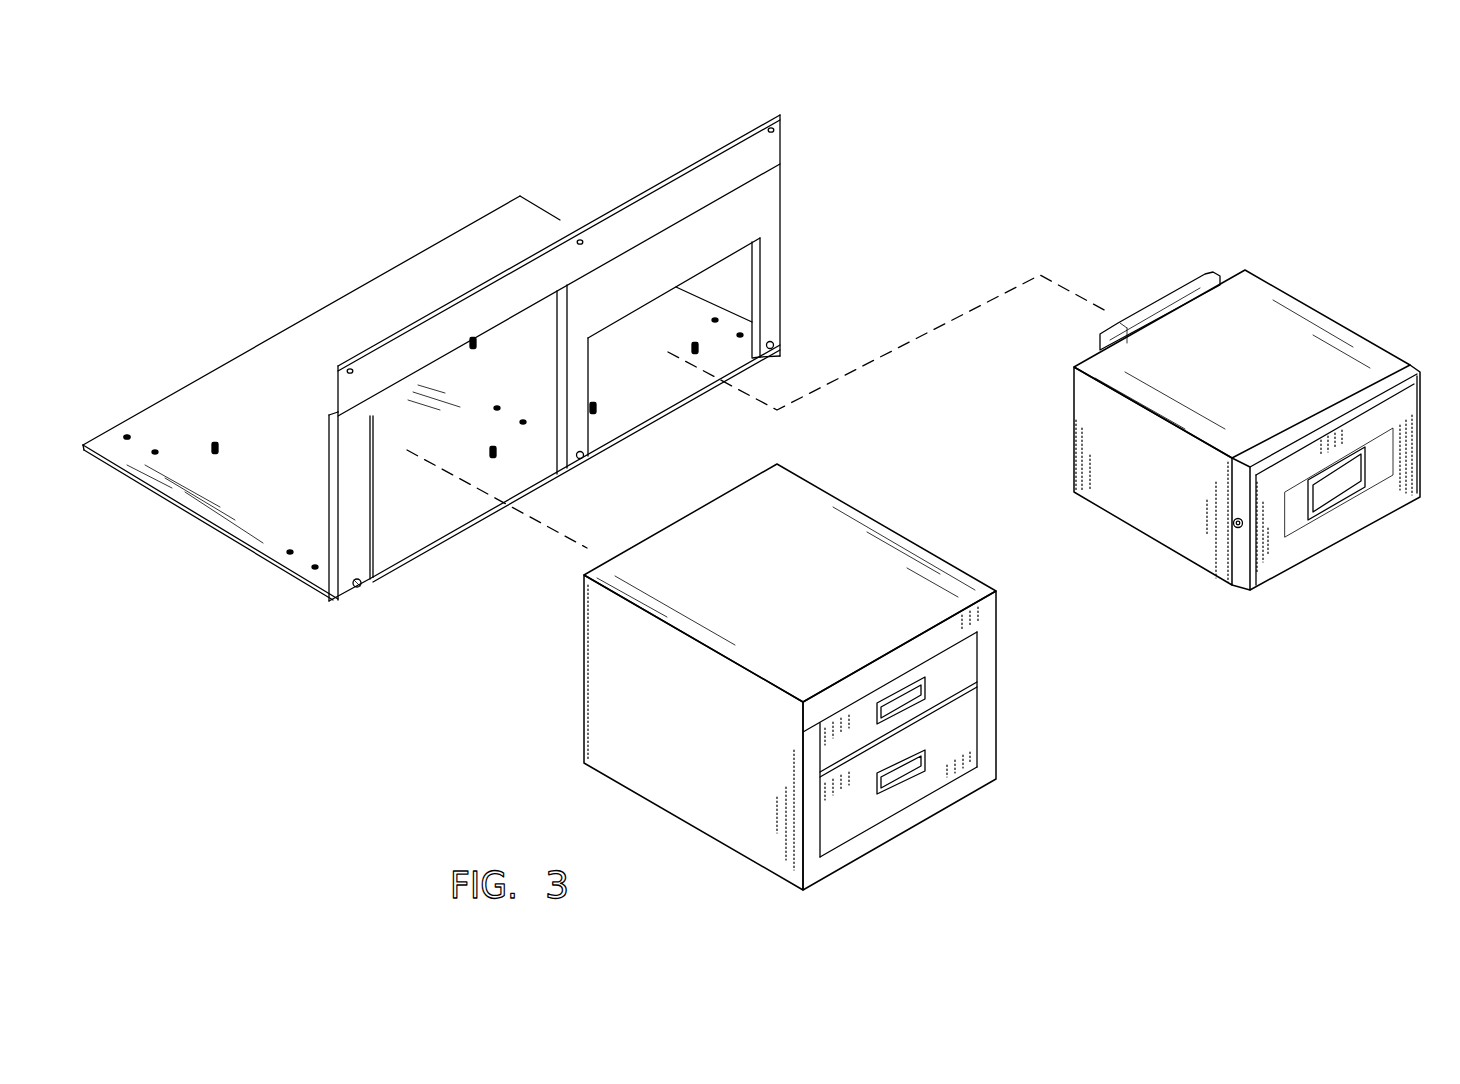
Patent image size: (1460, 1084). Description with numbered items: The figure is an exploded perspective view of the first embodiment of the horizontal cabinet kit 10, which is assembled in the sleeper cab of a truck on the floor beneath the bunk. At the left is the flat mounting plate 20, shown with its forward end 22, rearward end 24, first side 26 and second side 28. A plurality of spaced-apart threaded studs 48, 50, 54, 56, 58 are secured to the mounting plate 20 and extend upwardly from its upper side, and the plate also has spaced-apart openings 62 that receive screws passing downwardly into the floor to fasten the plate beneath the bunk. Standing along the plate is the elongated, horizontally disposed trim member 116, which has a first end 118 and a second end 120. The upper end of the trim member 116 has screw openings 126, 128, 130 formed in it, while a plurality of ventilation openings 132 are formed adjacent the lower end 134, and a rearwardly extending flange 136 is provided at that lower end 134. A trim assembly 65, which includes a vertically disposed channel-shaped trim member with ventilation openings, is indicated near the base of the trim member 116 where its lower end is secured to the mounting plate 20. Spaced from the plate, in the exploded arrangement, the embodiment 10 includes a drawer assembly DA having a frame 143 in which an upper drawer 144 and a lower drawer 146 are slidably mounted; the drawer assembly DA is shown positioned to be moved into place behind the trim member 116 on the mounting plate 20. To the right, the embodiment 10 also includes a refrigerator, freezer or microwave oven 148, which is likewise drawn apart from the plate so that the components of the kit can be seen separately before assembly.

The horizontal cabinet kit 10 is at (490, 702).
The mounting plate 20 is at (268, 337).
The forward end 22 is at (440, 548).
The rearward end 24 is at (400, 265).
The first side 26 is at (222, 532).
The second side 28 is at (703, 301).
The threaded stud 48 is at (212, 452).
The threaded stud 50 is at (497, 458).
The threaded stud 54 is at (597, 411).
The threaded stud 56 is at (475, 349).
The threaded stud 58 is at (699, 350).
The opening 62 is at (126, 432).
The trim assembly 65 is at (352, 608).
The trim member 116 is at (683, 179).
The first end 118 is at (336, 383).
The second end 120 is at (781, 149).
The screw opening 126 is at (350, 368).
The screw opening 128 is at (581, 239).
The screw opening 130 is at (774, 130).
The ventilation openings 132 is at (724, 188).
The lower end 134 is at (657, 233).
The flange 136 is at (328, 410).
The frame 143 is at (747, 802).
The drawer 144 is at (958, 674).
The drawer 146 is at (963, 736).
The refrigerator, freezer or microwave oven 148 is at (1422, 414).
The drawer assembly DA is at (822, 890).